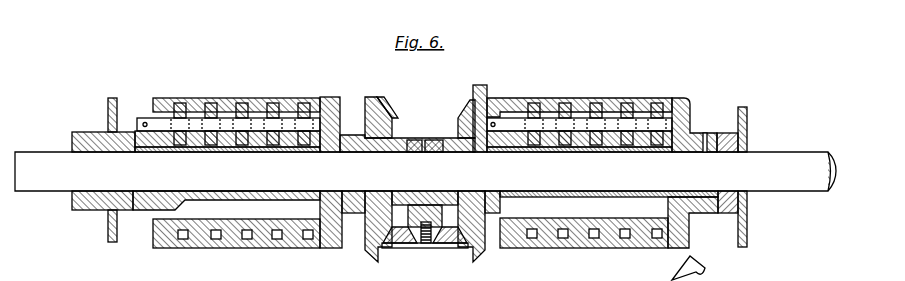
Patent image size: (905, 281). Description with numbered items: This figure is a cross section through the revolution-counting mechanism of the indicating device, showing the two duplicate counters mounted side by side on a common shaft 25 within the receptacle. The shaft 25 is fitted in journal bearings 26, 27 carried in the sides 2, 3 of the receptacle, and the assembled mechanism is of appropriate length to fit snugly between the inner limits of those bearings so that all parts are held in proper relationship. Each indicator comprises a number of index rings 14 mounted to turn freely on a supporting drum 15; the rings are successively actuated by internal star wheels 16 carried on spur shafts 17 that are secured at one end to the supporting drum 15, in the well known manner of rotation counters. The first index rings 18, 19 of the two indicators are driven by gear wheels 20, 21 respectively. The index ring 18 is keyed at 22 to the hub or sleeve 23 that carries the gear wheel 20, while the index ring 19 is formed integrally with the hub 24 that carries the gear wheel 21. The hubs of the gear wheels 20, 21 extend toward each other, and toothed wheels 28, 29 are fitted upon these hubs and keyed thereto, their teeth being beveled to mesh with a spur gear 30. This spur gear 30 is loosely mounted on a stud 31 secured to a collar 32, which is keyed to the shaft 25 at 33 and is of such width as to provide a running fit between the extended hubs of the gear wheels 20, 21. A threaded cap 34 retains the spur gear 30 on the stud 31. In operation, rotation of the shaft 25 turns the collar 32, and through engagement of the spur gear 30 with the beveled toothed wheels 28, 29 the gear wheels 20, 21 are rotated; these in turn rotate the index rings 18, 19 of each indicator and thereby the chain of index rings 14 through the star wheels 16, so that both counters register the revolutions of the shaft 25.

The side 2 is at (107, 111).
The side 3 is at (748, 119).
The index rings 14 is at (234, 99).
The supporting drum 15 is at (146, 116).
The internal star wheels 16 is at (182, 103).
The spur shafts 17 is at (122, 120).
The first index ring 18 is at (688, 99).
The first index ring 19 is at (326, 97).
The gear wheel 20 is at (481, 88).
The gear wheel 21 is at (370, 97).
The key 22 is at (705, 135).
The hub or sleeve 23 is at (585, 158).
The hub 24 is at (352, 134).
The shaft 25 is at (790, 155).
The journal bearing 26 is at (87, 211).
The journal bearing 27 is at (729, 214).
The toothed wheel 28 is at (458, 120).
The toothed wheel 29 is at (392, 112).
The spur gear 30 is at (445, 249).
The stud 31 is at (400, 248).
The collar 32 is at (414, 140).
The key 33 is at (434, 140).
The threaded cap 34 is at (425, 249).